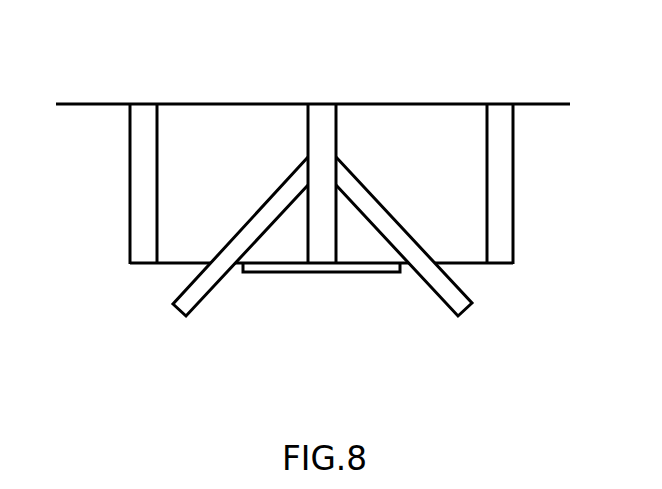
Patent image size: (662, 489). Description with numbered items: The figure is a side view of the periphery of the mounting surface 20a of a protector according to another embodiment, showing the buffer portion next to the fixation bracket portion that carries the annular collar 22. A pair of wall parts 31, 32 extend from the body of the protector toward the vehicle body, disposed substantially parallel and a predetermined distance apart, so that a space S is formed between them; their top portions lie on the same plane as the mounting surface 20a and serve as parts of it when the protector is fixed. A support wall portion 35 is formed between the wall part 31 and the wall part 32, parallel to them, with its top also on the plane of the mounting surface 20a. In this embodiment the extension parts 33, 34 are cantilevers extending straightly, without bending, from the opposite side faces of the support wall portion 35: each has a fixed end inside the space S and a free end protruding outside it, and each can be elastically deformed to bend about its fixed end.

The wall part 31 is at (118, 257).
The mounting surface 20a is at (165, 264).
The wall part 32 is at (130, 184).
The extension part 33 is at (262, 207).
The extension part 34 is at (382, 206).
The support wall portion 35 is at (337, 137).
The collar 22 is at (375, 273).
The space S is at (465, 178).